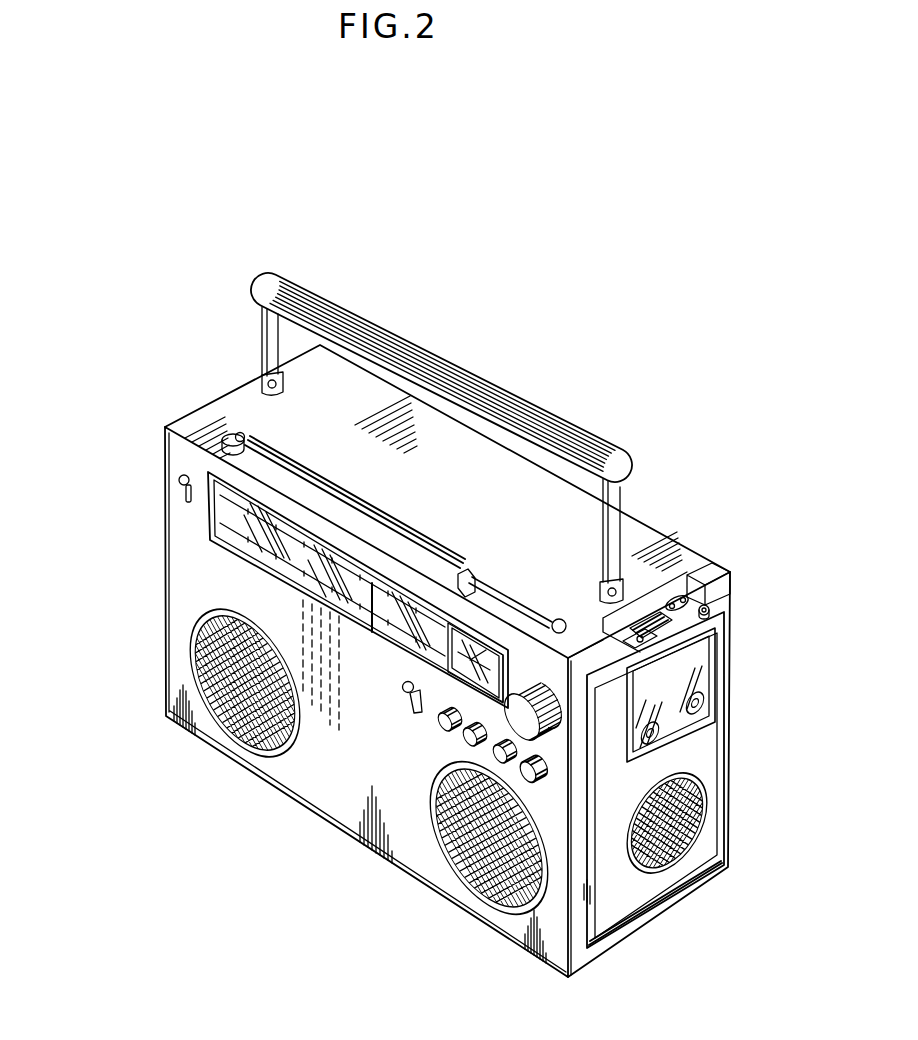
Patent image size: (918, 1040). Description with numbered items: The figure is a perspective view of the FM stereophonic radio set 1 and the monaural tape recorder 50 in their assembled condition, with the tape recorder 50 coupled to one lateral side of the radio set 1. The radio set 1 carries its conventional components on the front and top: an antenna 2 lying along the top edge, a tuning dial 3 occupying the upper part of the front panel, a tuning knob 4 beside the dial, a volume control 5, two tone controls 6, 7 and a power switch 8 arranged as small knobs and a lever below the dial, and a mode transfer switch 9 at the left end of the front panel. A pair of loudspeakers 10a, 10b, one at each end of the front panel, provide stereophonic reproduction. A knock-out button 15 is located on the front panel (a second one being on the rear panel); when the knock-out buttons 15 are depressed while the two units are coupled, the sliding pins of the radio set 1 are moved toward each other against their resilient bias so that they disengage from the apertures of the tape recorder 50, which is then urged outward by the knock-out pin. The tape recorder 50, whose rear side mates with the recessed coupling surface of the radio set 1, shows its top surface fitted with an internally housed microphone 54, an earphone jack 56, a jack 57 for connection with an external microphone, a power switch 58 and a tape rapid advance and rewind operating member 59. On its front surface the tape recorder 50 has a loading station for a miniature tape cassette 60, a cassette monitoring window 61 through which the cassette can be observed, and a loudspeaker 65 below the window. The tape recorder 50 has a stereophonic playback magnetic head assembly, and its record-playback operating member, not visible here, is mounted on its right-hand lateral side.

The radio set 1 is at (148, 562).
The antenna 2 is at (260, 440).
The tuning dial 3 is at (200, 543).
The tuning knob 4 is at (513, 690).
The volume control 5 is at (495, 757).
The tone control 6 is at (465, 738).
The tone control 7 is at (440, 727).
The power switch 8 is at (403, 694).
The mode transfer switch 9 is at (182, 478).
The loudspeaker 10a is at (470, 887).
The loudspeaker 10b is at (228, 740).
The knock-out button 15 is at (528, 781).
The tape recorder 50 is at (718, 882).
The microphone 54 is at (648, 618).
The earphone jack 56 is at (684, 597).
The jack 57 is at (712, 567).
The power switch 58 is at (710, 606).
The tape rapid advance and rewind operating member 59 is at (660, 636).
The miniature tape cassette 60 is at (700, 682).
The cassette monitoring window 61 is at (707, 727).
The loudspeaker 65 is at (700, 818).